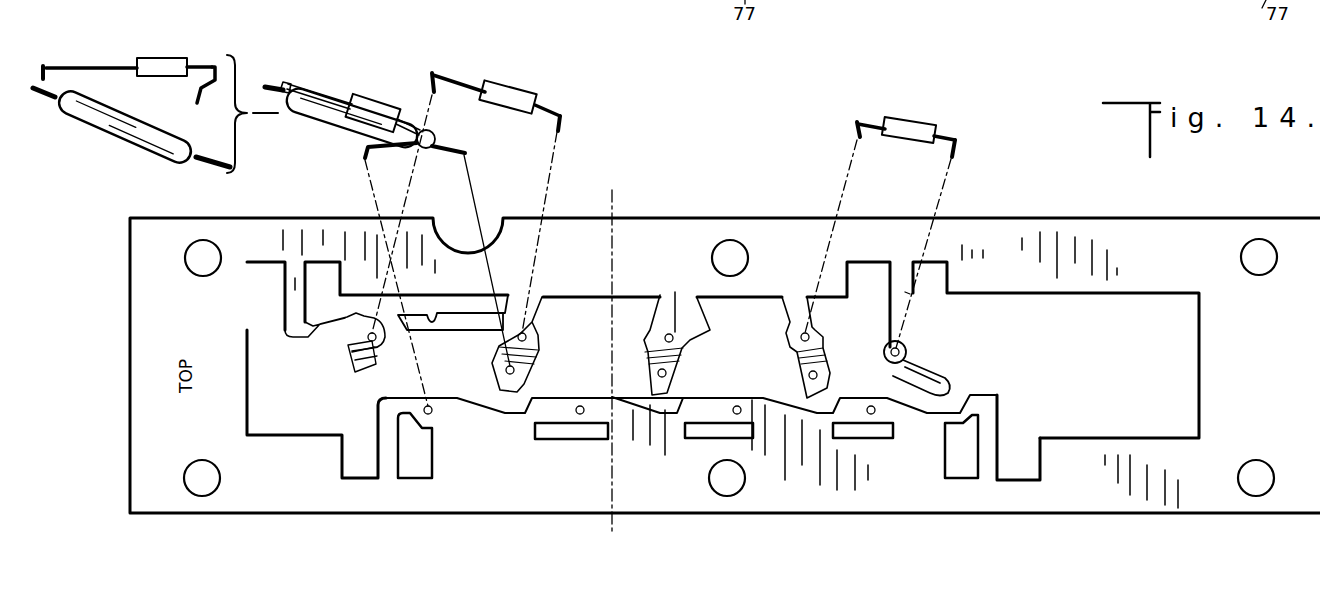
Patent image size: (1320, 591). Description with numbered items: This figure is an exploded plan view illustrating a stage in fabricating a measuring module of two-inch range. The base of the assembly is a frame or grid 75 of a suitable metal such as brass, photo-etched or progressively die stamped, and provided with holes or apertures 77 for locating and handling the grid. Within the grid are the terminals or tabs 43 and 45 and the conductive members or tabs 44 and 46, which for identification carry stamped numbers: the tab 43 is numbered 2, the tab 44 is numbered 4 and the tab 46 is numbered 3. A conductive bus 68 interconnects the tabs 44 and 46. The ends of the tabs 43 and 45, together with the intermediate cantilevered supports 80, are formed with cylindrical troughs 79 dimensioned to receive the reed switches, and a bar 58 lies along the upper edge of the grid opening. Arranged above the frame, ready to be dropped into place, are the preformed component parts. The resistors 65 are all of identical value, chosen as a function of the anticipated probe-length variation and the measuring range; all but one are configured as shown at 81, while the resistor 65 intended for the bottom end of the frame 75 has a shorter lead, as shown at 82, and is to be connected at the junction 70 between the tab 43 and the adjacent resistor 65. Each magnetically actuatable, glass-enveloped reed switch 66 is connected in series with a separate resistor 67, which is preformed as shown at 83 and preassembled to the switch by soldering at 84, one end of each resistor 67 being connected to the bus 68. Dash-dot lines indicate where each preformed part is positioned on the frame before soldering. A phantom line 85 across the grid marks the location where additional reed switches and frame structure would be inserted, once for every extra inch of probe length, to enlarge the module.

The tab identification number 2 is at (903, 286).
The tab identification number 3 is at (407, 442).
The tab identification number 4 is at (972, 446).
The terminal tab 43 is at (912, 295).
The conductive tab 44 is at (1000, 440).
The terminal tab 45 is at (282, 310).
The conductive tab 46 is at (376, 442).
The bar 58 is at (453, 334).
The resistor 65 is at (513, 96).
The reed switch 66 is at (140, 140).
The resistor 67 is at (157, 56).
The conductive bus 68 is at (550, 399).
The junction 70 is at (957, 392).
The frame 75 is at (1062, 218).
The locating aperture 77 is at (204, 241).
The cylindrical trough 79 is at (347, 357).
The cantilevered support 80 is at (657, 320).
The preformed resistor configuration 81 is at (561, 115).
The short-lead resistor configuration 82 is at (952, 136).
The preformed resistor configuration 83 is at (80, 65).
The solder joint 84 is at (278, 82).
The phantom line 85 is at (610, 487).